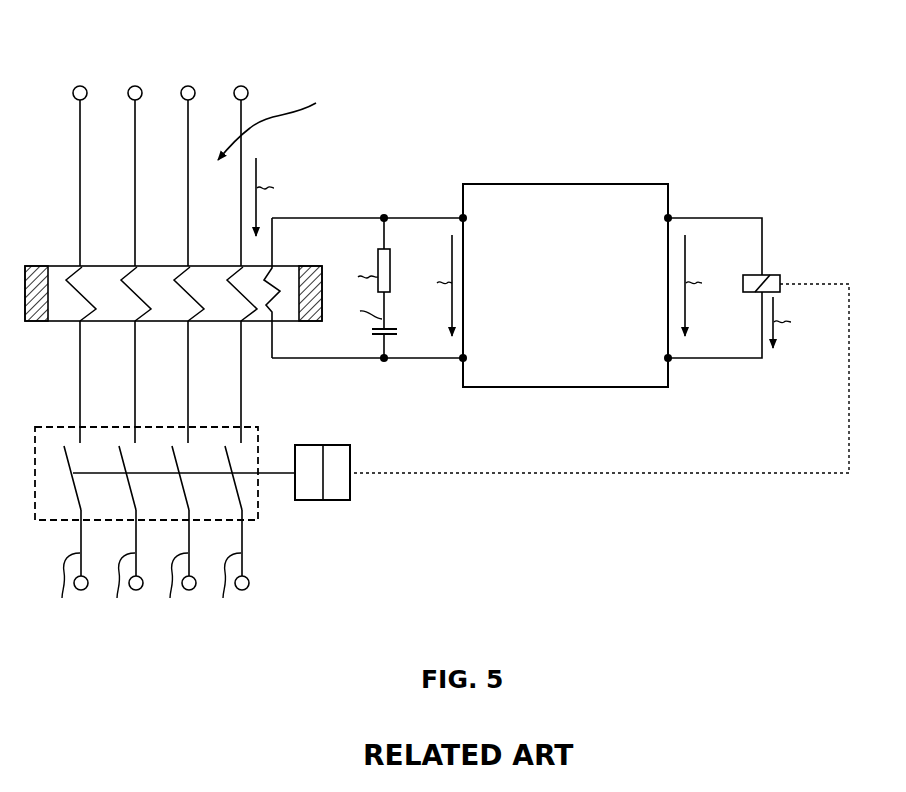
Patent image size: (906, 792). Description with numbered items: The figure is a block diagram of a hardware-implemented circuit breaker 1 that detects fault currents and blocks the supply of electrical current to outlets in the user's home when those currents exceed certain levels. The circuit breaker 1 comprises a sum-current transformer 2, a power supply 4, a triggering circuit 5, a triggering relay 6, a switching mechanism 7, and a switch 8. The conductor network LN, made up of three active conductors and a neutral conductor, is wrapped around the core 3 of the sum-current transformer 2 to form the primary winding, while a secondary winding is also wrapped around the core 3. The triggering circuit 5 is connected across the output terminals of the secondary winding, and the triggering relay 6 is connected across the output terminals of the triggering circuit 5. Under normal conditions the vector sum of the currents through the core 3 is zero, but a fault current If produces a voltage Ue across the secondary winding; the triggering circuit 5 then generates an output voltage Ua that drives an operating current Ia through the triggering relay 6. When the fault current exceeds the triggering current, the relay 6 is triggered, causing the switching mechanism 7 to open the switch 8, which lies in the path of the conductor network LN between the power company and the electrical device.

The circuit breaker 1 is at (507, 125).
The sum-current transformer 2 is at (62, 322).
The core 3 is at (265, 305).
The power supply 4 is at (348, 338).
The triggering circuit 5 is at (573, 302).
The triggering relay 6 is at (773, 275).
The switching mechanism 7 is at (352, 488).
The switch 8 is at (260, 500).